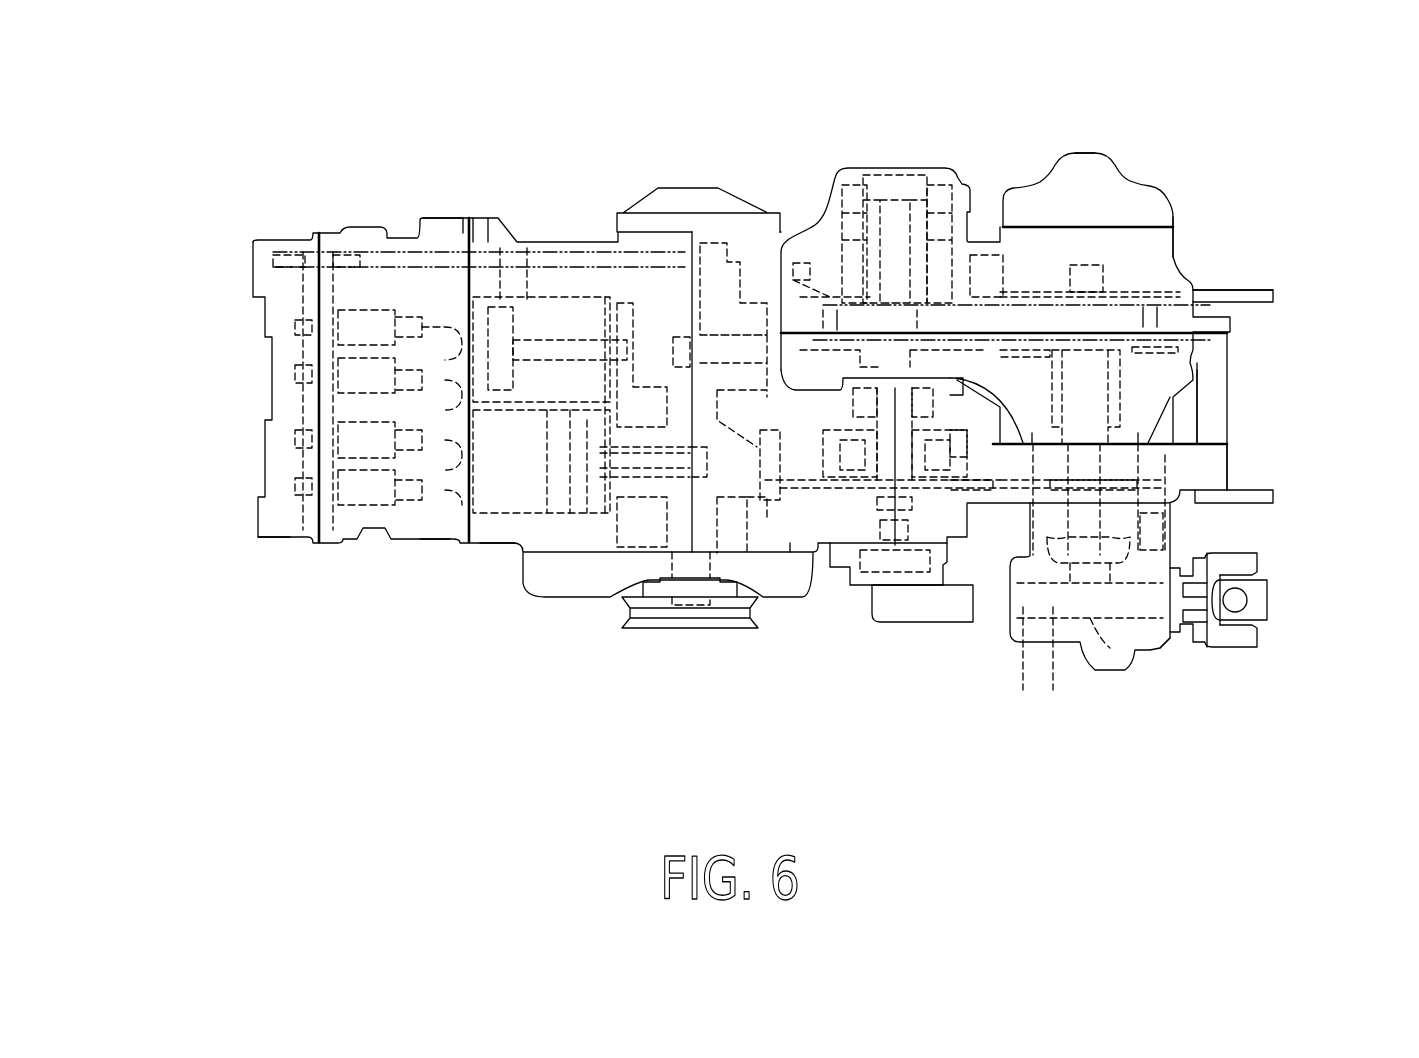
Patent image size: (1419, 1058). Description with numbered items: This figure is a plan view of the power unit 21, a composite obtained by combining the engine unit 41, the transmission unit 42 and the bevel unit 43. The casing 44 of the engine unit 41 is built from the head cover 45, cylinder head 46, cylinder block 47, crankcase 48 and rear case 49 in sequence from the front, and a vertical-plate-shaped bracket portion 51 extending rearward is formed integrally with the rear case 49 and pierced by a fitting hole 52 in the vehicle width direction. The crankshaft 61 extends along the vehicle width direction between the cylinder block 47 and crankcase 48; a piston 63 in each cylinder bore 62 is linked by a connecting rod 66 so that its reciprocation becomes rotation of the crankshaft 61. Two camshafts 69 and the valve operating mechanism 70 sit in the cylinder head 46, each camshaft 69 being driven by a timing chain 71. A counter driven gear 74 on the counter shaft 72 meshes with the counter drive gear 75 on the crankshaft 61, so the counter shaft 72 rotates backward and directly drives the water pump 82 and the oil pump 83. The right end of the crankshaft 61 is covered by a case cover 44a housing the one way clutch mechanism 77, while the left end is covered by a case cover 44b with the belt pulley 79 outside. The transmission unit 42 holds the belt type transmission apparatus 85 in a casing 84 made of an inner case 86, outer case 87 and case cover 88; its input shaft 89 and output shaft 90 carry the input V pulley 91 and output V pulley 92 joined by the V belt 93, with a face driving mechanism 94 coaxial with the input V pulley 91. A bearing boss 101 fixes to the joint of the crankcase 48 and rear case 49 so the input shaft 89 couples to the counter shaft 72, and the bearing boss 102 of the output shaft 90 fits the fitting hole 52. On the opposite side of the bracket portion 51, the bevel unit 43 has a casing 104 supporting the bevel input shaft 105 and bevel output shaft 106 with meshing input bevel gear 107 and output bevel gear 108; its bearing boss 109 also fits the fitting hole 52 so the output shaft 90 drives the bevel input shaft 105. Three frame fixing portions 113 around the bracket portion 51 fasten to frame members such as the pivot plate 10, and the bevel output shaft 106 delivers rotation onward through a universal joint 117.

The pivot plate 10 is at (1273, 498).
The power unit 21 is at (772, 170).
The engine unit 41 is at (232, 262).
The transmission unit 42 is at (1173, 168).
The bevel unit 43 is at (1125, 675).
The casing 44 is at (315, 722).
The case cover 44a is at (693, 200).
The case cover 44b is at (572, 598).
The head cover 45 is at (282, 540).
The cylinder head 46 is at (432, 543).
The cylinder block 47 is at (500, 543).
The crankcase 48 is at (790, 543).
The rear case 49 is at (980, 545).
The bracket portion 51 is at (1230, 463).
The fitting hole 52 is at (1050, 507).
The crankshaft 61 is at (662, 305).
The cylinder bore 62 is at (527, 247).
The piston 63 is at (500, 248).
The connecting rod 66 is at (570, 307).
The camshaft 69 is at (300, 358).
The valve operating mechanism 70 is at (362, 407).
The timing chain 71 is at (407, 250).
The counter shaft 72 is at (860, 490).
The counter driven gear 74 is at (810, 467).
The counter drive gear 75 is at (773, 450).
The one way clutch mechanism 77 is at (733, 205).
The belt pulley 79 is at (720, 628).
The water pump 82 is at (928, 622).
The oil pump 83 is at (857, 433).
The casing 84 is at (1333, 195).
The belt type transmission apparatus 85 is at (793, 85).
The inner case 86 is at (1195, 356).
The outer case 87 is at (1188, 268).
The case cover 88 is at (1173, 205).
The input shaft 89 is at (895, 165).
The output shaft 90 is at (1085, 265).
The input V pulley 91 is at (985, 215).
The output V pulley 92 is at (1053, 265).
The V belt 93 is at (1000, 278).
The face driving mechanism 94 is at (838, 237).
The bearing boss 101 is at (992, 392).
The bearing boss 102 is at (1140, 463).
The casing 104 is at (1155, 660).
The bevel input shaft 105 is at (1140, 510).
The bevel output shaft 106 is at (1053, 640).
The input bevel gear 107 is at (1018, 690).
The output bevel gear 108 is at (1080, 660).
The bearing boss 109 is at (1150, 450).
The frame fixing portion 113 is at (1215, 388).
The universal joint 117 is at (1232, 647).